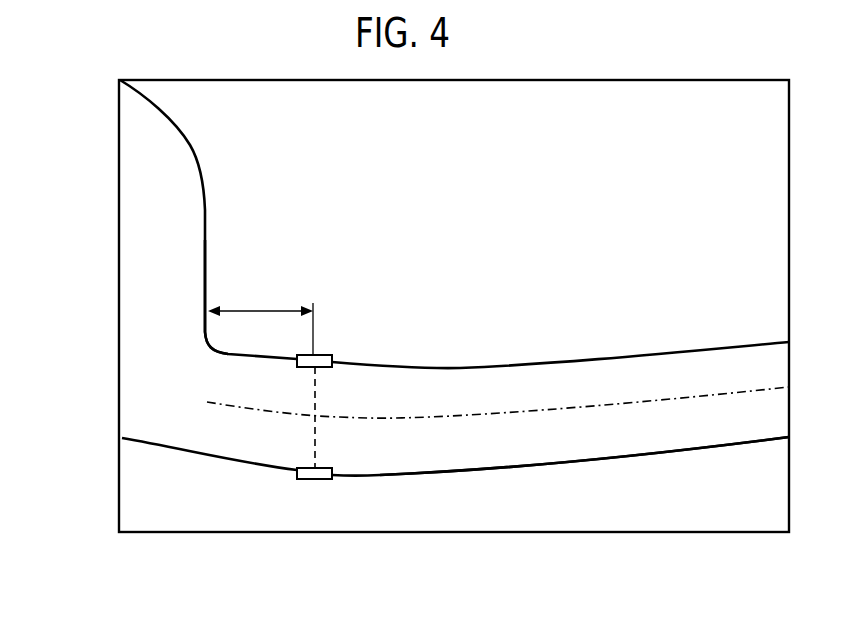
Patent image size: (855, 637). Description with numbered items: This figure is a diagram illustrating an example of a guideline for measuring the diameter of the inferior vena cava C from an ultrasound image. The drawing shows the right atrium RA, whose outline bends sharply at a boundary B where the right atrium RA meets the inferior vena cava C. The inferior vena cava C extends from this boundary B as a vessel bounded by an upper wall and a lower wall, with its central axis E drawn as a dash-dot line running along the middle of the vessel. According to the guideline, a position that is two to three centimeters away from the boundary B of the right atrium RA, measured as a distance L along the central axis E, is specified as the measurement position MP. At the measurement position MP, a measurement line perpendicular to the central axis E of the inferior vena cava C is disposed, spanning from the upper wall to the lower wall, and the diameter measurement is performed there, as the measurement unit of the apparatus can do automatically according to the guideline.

The right atrium RA is at (168, 207).
The boundary B is at (205, 268).
The distance L is at (260, 310).
The measurement position MP is at (318, 435).
The inferior vena cava C is at (547, 432).
The central axis E is at (662, 405).